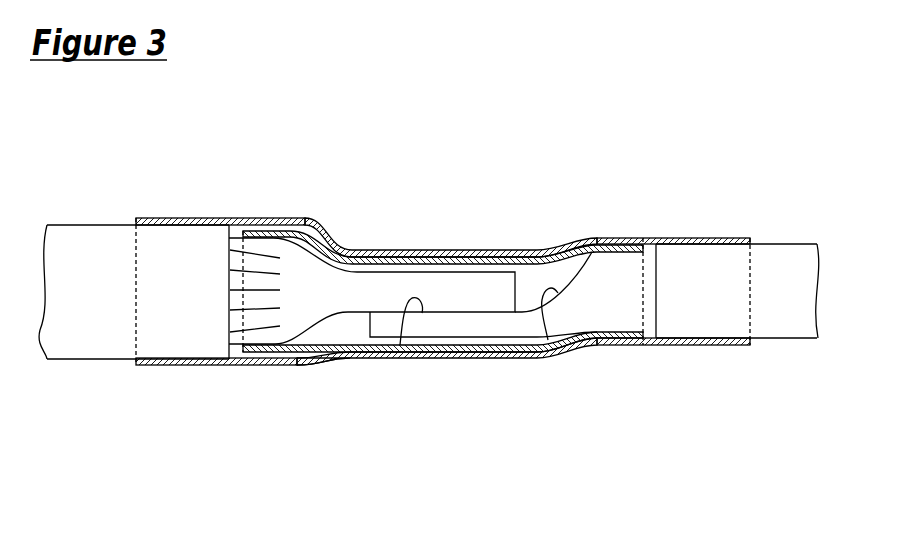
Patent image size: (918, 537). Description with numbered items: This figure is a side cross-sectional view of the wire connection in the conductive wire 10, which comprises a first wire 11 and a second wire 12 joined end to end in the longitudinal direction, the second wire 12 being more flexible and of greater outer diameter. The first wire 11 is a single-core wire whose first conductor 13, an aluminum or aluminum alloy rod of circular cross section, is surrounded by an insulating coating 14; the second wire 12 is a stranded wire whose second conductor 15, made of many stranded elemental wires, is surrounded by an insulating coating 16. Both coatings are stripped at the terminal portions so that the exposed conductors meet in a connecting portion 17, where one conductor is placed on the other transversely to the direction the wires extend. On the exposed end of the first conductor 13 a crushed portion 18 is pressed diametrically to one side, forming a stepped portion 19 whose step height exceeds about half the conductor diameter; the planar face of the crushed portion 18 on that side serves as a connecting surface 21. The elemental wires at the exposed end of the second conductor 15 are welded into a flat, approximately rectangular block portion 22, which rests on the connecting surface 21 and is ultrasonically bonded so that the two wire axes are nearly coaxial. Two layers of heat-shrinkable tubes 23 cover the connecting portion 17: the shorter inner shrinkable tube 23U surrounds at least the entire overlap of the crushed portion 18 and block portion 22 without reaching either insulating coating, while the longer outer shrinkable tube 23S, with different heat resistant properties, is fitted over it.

The conductive wire 10 is at (442, 108).
The first wire 11 is at (778, 257).
The second wire 12 is at (90, 237).
The first conductor 13 is at (613, 265).
The insulating coating 14 is at (693, 258).
The second conductor 15 is at (300, 268).
The insulating coating 16 is at (185, 257).
The connecting portion 17 is at (460, 285).
The crushed portion 18 is at (452, 325).
The stepped portion 19 is at (548, 340).
The connecting surface 21 is at (400, 345).
The block portion 22 is at (490, 283).
The shrinkable tubes 23 is at (443, 420).
The inner shrinkable tube 23U is at (298, 352).
The outer shrinkable tube 23S is at (352, 360).